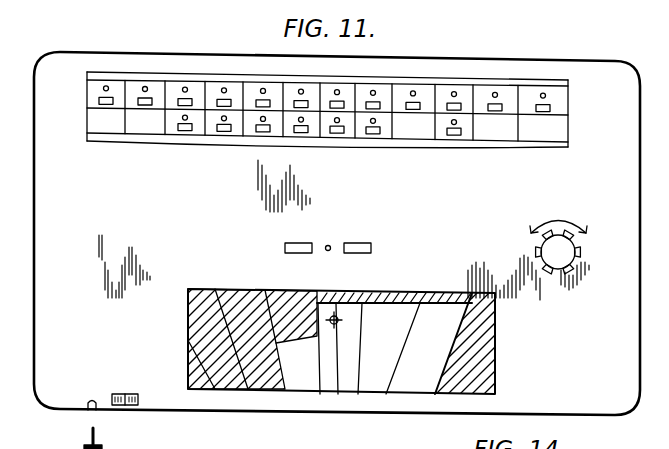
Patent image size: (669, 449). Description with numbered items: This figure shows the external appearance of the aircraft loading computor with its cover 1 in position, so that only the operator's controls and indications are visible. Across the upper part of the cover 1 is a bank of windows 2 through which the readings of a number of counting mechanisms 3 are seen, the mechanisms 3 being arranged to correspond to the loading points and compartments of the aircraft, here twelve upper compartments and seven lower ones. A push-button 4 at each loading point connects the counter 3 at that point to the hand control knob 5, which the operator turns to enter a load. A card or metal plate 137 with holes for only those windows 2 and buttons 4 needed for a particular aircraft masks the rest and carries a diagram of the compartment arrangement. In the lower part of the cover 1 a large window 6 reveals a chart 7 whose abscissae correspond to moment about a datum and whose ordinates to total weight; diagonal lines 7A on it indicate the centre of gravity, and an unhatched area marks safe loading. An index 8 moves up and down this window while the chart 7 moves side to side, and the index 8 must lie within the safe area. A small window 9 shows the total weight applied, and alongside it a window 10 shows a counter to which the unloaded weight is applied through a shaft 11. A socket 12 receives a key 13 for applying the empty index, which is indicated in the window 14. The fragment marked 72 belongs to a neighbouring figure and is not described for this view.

In FIG. 11, the cover 1 is at (600, 72).
In FIG. 11, the card or metal plate 137 is at (562, 135).
In FIG. 11, the windows 2 is at (545, 108).
In FIG. 11, the counting mechanisms 3 is at (110, 96).
In FIG. 11, the push-button 4 is at (263, 90).
In FIG. 11, the hand control knob 5 is at (562, 248).
In FIG. 11, the large window 6 is at (483, 378).
In FIG. 11, the chart 7 is at (438, 357).
In FIG. 11, the diagonal lines 7A is at (247, 378).
In FIG. 11, the index 8 is at (336, 316).
In FIG. 11, the small window 9 is at (365, 243).
In FIG. 11, the window 10 is at (290, 243).
In FIG. 11, the shaft 11 is at (329, 243).
In FIG. 11, the socket 12 is at (85, 411).
In FIG. 11, the key 13 is at (102, 437).
In FIG. 11, the window 14 is at (136, 405).
In FIG. 14, the element of FIG. 14 72 is at (604, 448).